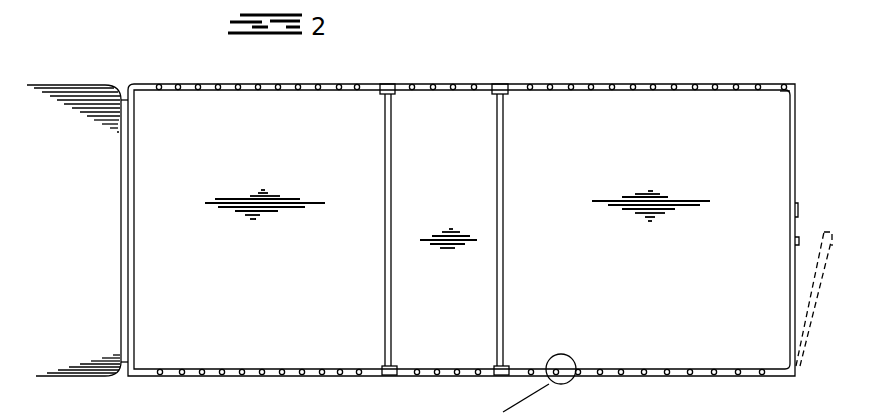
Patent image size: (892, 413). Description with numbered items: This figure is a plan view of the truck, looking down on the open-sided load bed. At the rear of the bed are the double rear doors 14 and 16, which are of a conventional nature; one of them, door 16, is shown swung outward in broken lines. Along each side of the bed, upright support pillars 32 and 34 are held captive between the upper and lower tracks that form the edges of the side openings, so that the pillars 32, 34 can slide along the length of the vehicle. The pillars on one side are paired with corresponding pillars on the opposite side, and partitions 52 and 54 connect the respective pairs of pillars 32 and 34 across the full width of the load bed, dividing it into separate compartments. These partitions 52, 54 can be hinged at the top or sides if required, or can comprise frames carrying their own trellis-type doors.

The rear door 14 is at (796, 155).
The rear door 16 is at (797, 289).
The upright support pillar 32 is at (381, 365).
The upright support pillar 34 is at (376, 93).
The partition 52 is at (384, 248).
The partition 54 is at (509, 253).